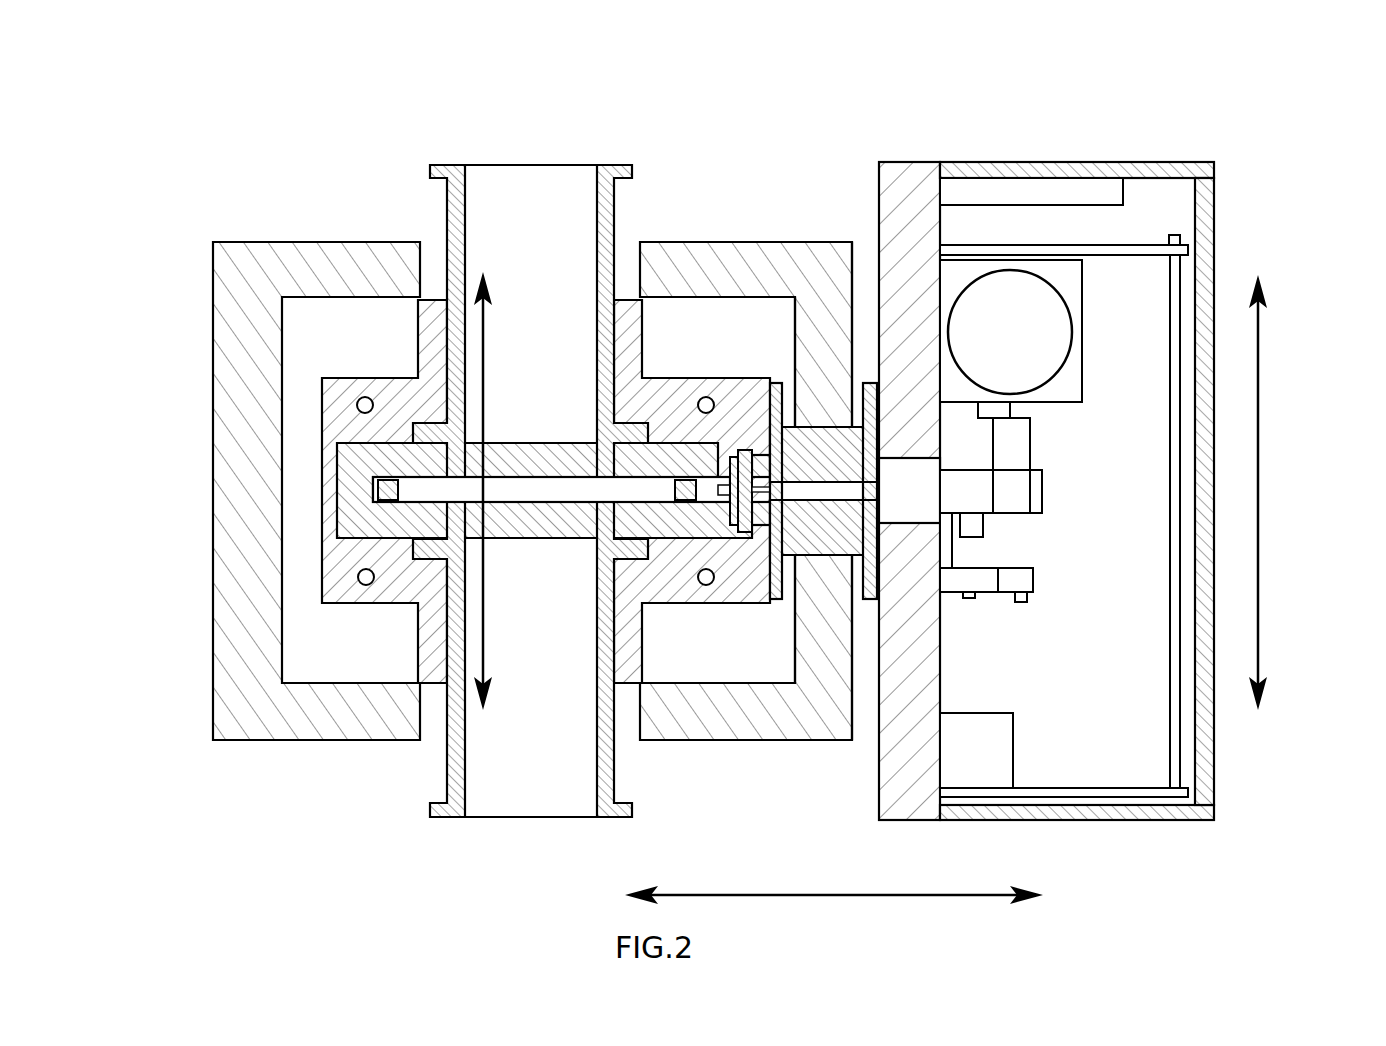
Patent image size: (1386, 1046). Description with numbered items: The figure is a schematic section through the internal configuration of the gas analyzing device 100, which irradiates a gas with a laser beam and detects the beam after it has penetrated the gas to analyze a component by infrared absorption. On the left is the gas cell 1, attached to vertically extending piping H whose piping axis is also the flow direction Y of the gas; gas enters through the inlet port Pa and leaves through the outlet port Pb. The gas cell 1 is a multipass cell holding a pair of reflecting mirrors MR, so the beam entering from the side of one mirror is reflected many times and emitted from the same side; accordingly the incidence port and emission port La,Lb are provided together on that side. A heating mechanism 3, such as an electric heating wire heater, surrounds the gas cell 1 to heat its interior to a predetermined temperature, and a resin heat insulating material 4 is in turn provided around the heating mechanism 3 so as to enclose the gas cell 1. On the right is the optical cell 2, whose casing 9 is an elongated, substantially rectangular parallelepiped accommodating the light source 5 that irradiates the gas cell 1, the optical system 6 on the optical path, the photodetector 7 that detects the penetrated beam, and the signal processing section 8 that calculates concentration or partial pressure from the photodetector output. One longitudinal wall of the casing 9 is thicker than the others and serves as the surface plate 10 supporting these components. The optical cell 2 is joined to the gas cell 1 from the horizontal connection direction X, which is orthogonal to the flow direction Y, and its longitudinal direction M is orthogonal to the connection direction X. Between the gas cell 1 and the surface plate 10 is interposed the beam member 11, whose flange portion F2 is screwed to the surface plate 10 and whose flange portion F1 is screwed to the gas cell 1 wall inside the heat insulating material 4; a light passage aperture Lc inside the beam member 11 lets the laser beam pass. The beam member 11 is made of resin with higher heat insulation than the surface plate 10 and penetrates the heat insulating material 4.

The gas analyzing device 100 is at (258, 108).
The gas cell 1 is at (316, 356).
The optical cell 2 is at (852, 142).
The heating mechanism 3 is at (365, 397).
The heat insulating material 4 is at (265, 740).
The light source 5 is at (1082, 330).
The optical system 6 is at (1064, 452).
The photodetector 7 is at (1037, 580).
The signal processing section 8 is at (1168, 643).
The casing 9 is at (1214, 218).
The surface plate 10 is at (879, 800).
The beam member 11 is at (822, 427).
The piping H is at (447, 205).
The reflecting mirror MR is at (390, 479).
The inlet port Pa is at (530, 443).
The outlet port Pb is at (530, 538).
The flow direction Y is at (551, 491).
The connection direction X is at (834, 909).
The longitudinal direction M is at (1267, 492).
The flange portion F1 is at (777, 380).
The flange portion F2 is at (872, 380).
The incidence port and emission port La,Lb is at (757, 493).
The light passage aperture Lc is at (827, 500).